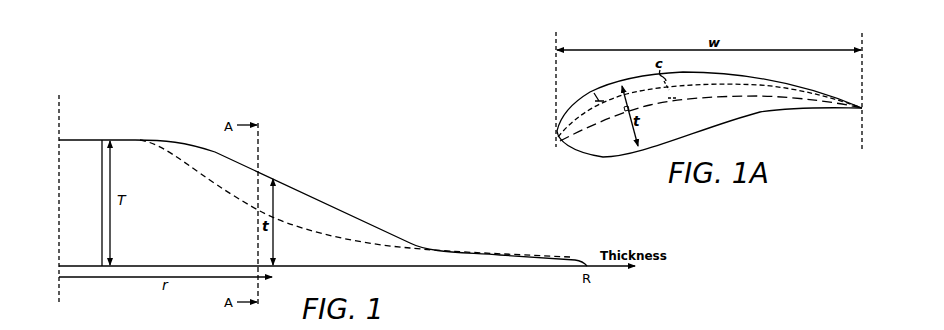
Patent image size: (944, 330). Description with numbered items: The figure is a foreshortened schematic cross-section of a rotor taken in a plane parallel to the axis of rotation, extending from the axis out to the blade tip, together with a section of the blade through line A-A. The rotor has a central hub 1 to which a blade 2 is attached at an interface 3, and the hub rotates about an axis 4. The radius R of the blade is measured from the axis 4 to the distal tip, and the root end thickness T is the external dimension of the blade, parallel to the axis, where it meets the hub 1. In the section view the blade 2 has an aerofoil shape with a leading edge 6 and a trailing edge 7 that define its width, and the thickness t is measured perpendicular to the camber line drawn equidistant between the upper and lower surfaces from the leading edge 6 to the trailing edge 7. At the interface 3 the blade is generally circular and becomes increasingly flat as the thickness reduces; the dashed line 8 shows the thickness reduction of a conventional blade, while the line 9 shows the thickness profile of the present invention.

In FIG. 1, the central hub 1 is at (81, 139).
In FIG. 1, the blade 2 is at (185, 143).
In FIG. 1, the interface 3 is at (102, 163).
In FIG. 1, the axis of rotation 4 is at (57, 112).
In FIG. 1A, the leading edge 6 is at (559, 138).
In FIG. 1A, the trailing edge 7 is at (865, 108).
In FIG. 1, the dashed line 8 is at (213, 188).
In FIG. 1A, the dashed line 8 is at (595, 92).
In FIG. 1, the thickness profile line 9 is at (302, 190).